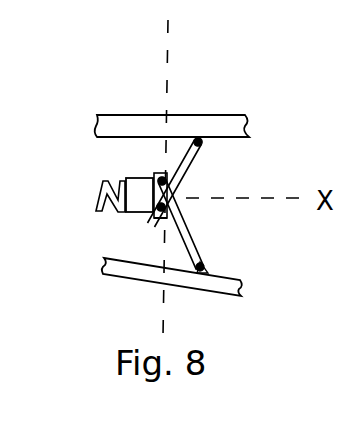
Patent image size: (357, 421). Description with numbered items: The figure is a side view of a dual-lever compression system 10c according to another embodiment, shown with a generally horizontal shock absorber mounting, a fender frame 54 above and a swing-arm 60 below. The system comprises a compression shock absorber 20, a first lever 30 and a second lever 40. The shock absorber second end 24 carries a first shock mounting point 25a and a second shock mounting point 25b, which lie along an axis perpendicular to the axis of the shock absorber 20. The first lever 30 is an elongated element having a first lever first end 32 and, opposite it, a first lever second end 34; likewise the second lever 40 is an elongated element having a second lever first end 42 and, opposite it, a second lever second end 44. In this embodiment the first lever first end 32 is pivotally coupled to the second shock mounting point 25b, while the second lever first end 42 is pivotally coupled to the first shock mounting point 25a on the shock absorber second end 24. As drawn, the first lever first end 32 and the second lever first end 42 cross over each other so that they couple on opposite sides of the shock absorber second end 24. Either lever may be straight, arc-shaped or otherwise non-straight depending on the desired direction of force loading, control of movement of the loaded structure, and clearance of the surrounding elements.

The dual-lever compression system 10c is at (93, 164).
The fender frame 54 is at (157, 115).
The swing-arm 60 is at (215, 293).
The first shock mounting point 25a is at (164, 178).
The second shock mounting point 25b is at (158, 209).
The first lever second end 34 is at (202, 144).
The first lever 30 is at (182, 180).
The second lever 40 is at (186, 224).
The second lever second end 44 is at (207, 264).
The second lever first end 42 is at (157, 174).
The first lever first end 32 is at (160, 220).
The compression shock absorber 20 is at (133, 221).
The shock absorber second end 24 is at (133, 179).